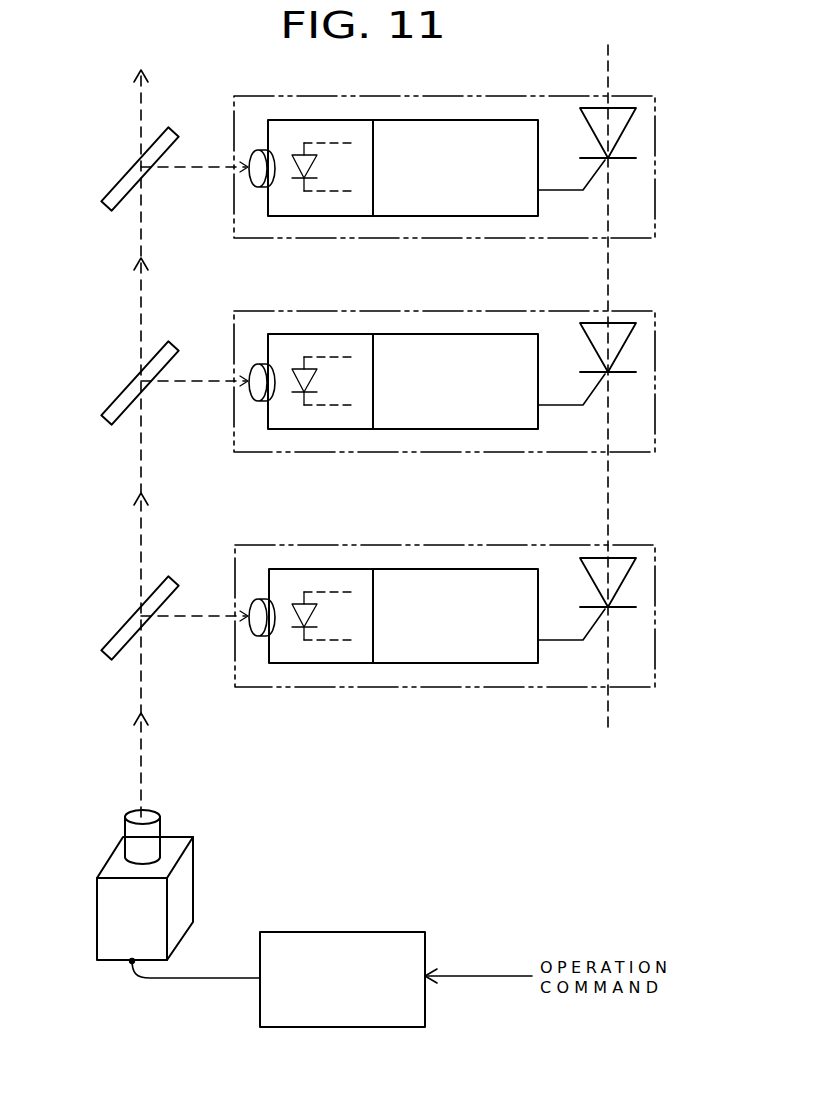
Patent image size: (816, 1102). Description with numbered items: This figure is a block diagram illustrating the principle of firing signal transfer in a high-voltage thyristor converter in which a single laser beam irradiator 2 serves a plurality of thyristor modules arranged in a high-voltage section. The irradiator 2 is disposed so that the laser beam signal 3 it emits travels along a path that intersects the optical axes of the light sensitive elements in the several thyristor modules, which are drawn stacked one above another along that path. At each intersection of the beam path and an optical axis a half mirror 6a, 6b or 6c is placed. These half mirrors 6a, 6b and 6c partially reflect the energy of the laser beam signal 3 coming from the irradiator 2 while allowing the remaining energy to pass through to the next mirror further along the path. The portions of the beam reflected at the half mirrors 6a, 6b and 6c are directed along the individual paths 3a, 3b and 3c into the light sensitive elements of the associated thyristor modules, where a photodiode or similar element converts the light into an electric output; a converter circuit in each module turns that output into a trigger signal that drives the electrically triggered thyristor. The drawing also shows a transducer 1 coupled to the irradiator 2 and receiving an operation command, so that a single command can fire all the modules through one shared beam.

The transducer 1 is at (332, 932).
The laser beam irradiator 2 is at (192, 868).
The laser beam signal 3 is at (145, 696).
The path 3a is at (214, 615).
The path 3b is at (214, 380).
The path 3c is at (204, 166).
The half mirror 6a is at (114, 631).
The half mirror 6b is at (113, 394).
The half mirror 6c is at (113, 179).